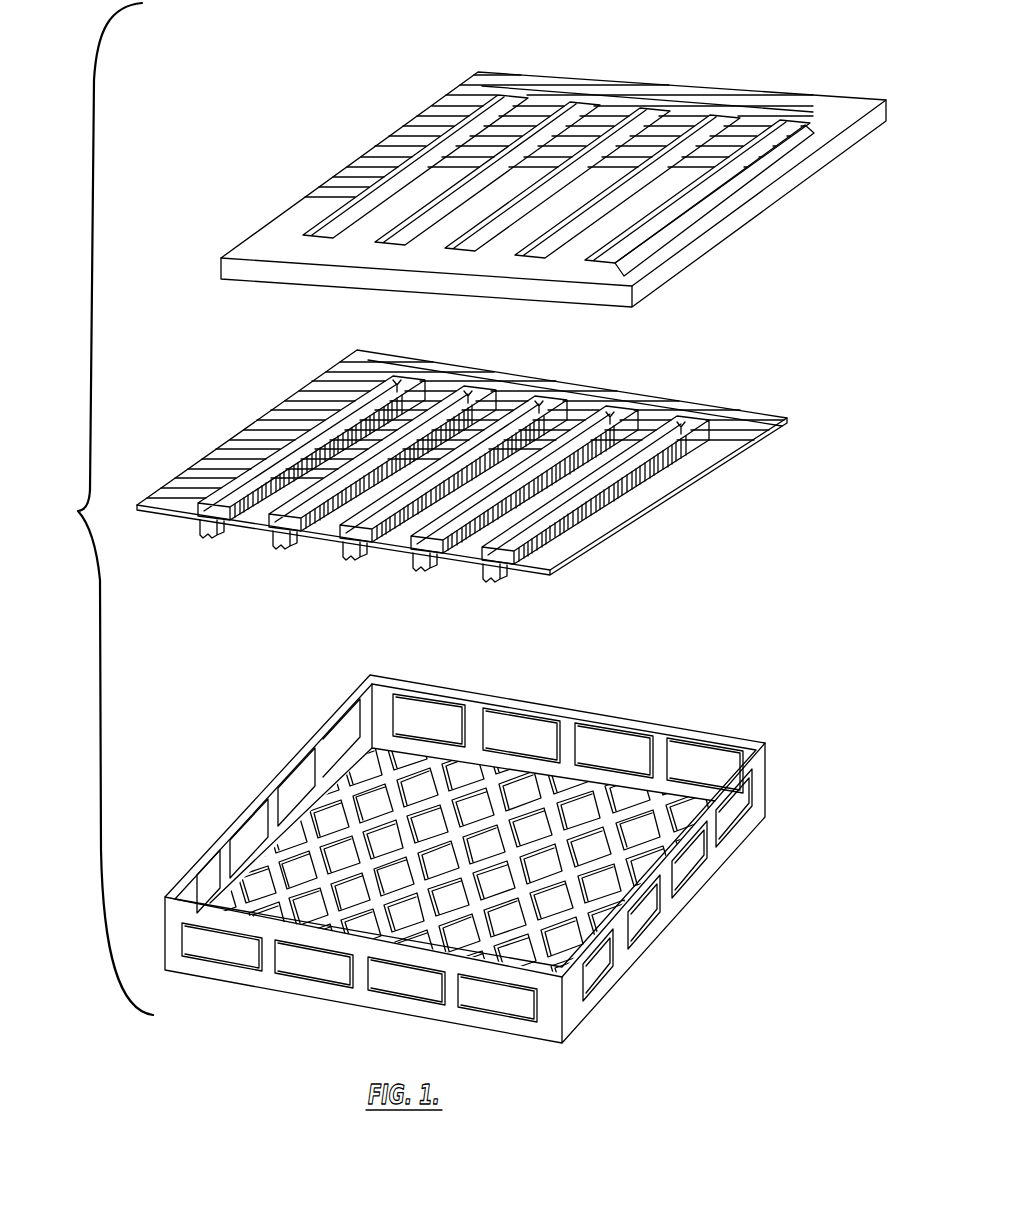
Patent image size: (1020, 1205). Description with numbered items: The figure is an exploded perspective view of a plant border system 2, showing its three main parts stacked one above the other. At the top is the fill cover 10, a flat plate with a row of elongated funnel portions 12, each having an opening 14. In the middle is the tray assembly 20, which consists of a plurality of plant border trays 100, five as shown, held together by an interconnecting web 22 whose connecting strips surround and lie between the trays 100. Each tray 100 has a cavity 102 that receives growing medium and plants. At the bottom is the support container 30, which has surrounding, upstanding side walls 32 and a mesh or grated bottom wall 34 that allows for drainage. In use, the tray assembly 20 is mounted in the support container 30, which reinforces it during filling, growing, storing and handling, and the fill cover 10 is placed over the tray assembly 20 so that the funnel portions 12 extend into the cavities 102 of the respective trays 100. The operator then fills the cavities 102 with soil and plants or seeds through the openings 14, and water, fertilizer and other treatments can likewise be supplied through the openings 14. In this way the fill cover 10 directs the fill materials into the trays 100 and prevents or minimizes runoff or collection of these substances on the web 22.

The plant border system 2 is at (74, 364).
The fill cover 10 is at (553, 159).
The funnel portions 12 is at (432, 138).
The openings 14 is at (533, 134).
The tray assembly 20 is at (458, 467).
The interconnecting web 22 is at (712, 394).
The cavities 102 is at (417, 427).
The plant border trays 100 is at (287, 552).
The support container 30 is at (480, 838).
The side walls 32 is at (712, 857).
The bottom wall 34 is at (528, 908).